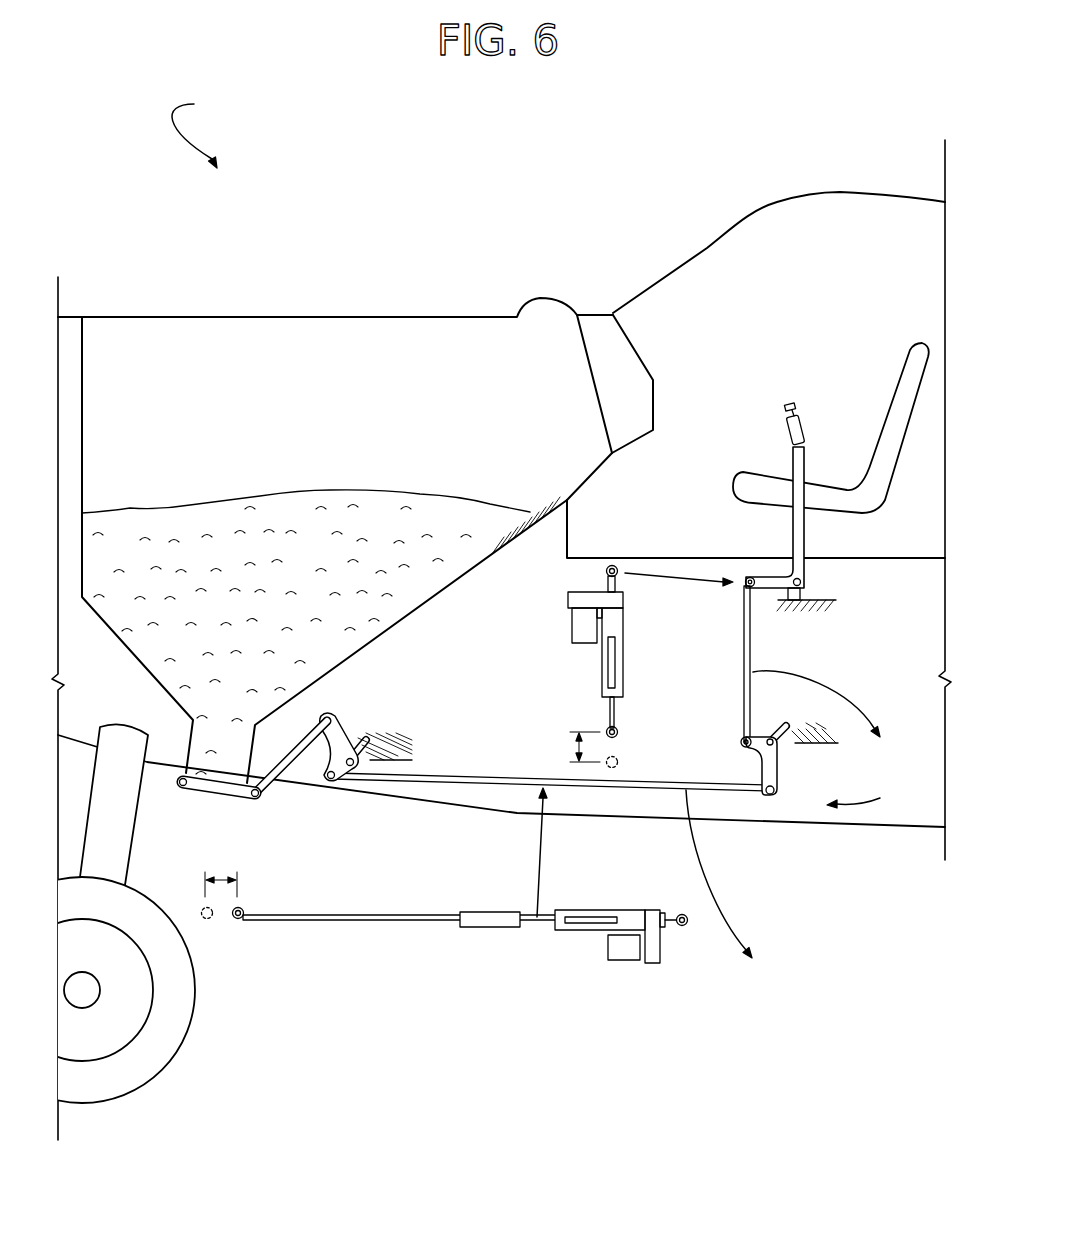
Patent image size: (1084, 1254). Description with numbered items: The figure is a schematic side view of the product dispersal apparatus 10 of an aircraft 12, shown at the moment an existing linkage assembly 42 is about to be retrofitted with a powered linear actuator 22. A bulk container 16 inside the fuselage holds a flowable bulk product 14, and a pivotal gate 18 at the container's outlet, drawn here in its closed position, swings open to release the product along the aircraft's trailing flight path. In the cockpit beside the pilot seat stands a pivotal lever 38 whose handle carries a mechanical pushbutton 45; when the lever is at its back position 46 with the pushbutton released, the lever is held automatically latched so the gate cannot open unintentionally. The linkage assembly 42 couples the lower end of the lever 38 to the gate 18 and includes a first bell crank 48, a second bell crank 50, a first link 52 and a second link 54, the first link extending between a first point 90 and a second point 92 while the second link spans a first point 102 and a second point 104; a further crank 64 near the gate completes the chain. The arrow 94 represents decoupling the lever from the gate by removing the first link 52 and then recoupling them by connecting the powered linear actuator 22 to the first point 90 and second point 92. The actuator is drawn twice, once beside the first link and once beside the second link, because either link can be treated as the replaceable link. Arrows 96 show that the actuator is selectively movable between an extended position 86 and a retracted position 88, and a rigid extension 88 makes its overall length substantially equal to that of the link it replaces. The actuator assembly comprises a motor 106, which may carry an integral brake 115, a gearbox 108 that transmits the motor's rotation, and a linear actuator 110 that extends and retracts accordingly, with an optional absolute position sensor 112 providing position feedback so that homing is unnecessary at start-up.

The product dispersal apparatus 10 is at (198, 130).
The aircraft 12 is at (738, 228).
The flowable bulk product 14 is at (251, 500).
The bulk container 16 is at (393, 622).
The pivotal gate 18 is at (207, 797).
The powered linear actuator 22 is at (467, 794).
The pivotal lever 38 is at (805, 467).
The linkage assembly 42 is at (870, 799).
The mechanical pushbutton 45 is at (797, 407).
The back position 46 is at (792, 400).
The first bell crank 48 is at (767, 594).
The second bell crank 50 is at (778, 777).
The first link 52 is at (744, 645).
The second link 54 is at (453, 773).
The bell crank 64 is at (340, 728).
The extended position 86 is at (577, 763).
The retracted position 88 is at (577, 732).
The first point 90 is at (750, 576).
The second point 92 is at (746, 746).
The arrow 94 is at (680, 563).
The arrows 96 is at (577, 747).
The first point 102 is at (773, 794).
The second point 104 is at (327, 781).
The motor 106 is at (572, 637).
The gearbox 108 is at (568, 600).
The linear actuator 110 is at (624, 675).
The absolute position sensor 112 is at (608, 660).
The brake 115 is at (568, 612).